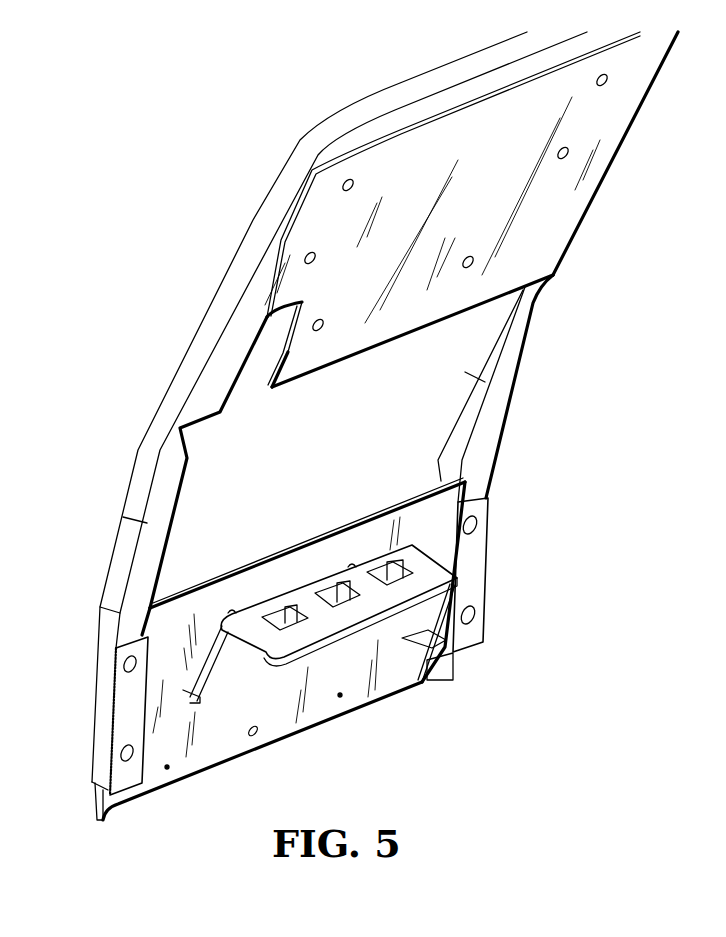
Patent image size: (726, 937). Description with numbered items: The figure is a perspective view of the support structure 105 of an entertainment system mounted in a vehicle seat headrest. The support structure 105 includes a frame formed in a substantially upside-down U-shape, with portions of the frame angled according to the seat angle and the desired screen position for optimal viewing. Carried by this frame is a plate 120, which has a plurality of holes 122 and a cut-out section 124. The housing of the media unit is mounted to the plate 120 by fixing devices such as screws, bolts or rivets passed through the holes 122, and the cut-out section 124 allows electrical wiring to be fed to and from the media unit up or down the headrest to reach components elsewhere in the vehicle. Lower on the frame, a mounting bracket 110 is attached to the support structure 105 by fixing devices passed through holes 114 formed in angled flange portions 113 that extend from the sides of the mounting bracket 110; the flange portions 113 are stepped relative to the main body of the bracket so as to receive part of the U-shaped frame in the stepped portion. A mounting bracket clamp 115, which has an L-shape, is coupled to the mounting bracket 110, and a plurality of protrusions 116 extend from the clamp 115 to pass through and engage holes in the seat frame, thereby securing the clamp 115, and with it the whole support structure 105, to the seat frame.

The support structure 105 is at (502, 397).
The mounting bracket 110 is at (168, 620).
The flange portions 113 is at (128, 718).
The holes 114 is at (480, 526).
The mounting bracket clamp 115 is at (375, 607).
The protrusions 116 is at (290, 607).
The plate 120 is at (555, 195).
The holes 122 is at (343, 185).
The cut-out section 124 is at (247, 357).